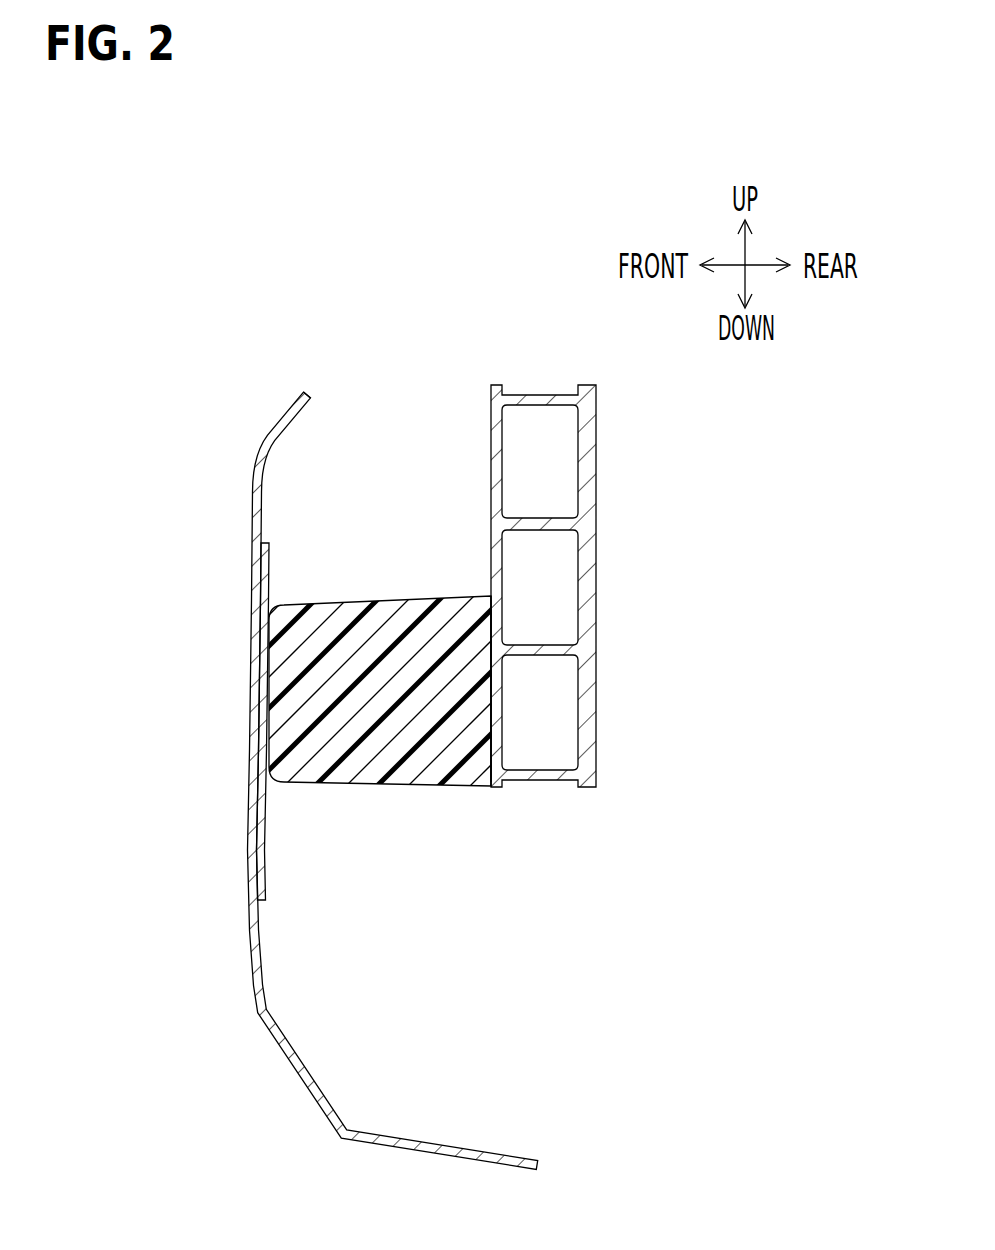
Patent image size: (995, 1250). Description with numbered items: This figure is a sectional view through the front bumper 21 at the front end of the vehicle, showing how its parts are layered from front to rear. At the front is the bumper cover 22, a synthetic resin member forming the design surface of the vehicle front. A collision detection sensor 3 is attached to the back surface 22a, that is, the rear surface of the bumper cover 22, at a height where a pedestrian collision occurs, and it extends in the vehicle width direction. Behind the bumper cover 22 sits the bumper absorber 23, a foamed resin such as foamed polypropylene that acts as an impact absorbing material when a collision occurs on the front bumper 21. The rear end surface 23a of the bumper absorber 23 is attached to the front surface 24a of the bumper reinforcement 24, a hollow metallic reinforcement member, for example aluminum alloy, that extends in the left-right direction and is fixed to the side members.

The front bumper 21 is at (216, 439).
The bumper cover 22 is at (255, 1004).
The back surface 22a is at (288, 432).
The collision detection sensor 3 is at (268, 582).
The bumper absorber 23 is at (423, 604).
The rear end surface 23a is at (495, 720).
The bumper reinforcement 24 is at (594, 487).
The front surface 24a is at (490, 750).